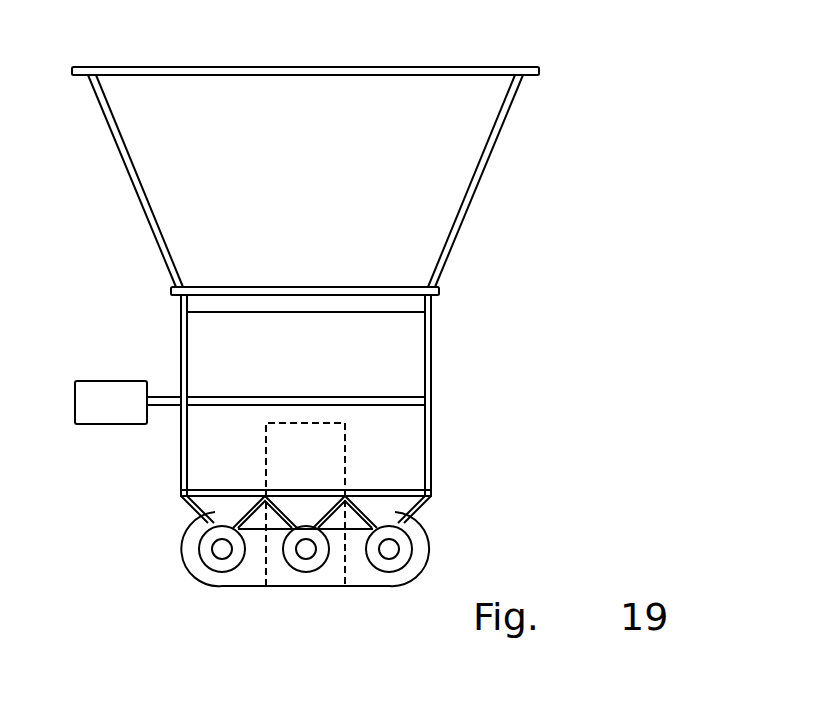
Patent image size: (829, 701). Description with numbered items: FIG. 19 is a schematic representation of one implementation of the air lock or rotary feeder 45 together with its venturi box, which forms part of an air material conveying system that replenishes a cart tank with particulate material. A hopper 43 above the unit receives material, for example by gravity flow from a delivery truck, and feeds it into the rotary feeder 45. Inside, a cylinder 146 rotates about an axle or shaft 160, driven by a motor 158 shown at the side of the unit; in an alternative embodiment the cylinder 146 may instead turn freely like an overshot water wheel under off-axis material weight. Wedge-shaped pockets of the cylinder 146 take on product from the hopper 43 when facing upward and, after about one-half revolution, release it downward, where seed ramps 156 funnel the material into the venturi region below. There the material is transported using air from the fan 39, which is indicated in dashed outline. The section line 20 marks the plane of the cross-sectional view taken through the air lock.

The section line 20- 20 is at (322, 27).
The hopper 43 is at (483, 172).
The rotary feeder or air lock mechanism 45 is at (373, 396).
The cylinder 146 is at (327, 376).
The axle or shaft 160 is at (387, 401).
The motor 158 is at (112, 425).
The fan 39 is at (346, 463).
The seed ramps 156 is at (187, 513).